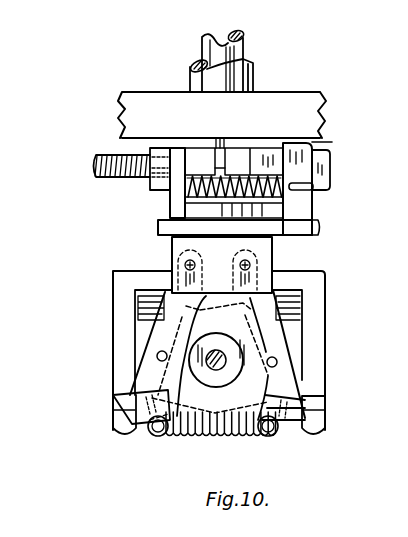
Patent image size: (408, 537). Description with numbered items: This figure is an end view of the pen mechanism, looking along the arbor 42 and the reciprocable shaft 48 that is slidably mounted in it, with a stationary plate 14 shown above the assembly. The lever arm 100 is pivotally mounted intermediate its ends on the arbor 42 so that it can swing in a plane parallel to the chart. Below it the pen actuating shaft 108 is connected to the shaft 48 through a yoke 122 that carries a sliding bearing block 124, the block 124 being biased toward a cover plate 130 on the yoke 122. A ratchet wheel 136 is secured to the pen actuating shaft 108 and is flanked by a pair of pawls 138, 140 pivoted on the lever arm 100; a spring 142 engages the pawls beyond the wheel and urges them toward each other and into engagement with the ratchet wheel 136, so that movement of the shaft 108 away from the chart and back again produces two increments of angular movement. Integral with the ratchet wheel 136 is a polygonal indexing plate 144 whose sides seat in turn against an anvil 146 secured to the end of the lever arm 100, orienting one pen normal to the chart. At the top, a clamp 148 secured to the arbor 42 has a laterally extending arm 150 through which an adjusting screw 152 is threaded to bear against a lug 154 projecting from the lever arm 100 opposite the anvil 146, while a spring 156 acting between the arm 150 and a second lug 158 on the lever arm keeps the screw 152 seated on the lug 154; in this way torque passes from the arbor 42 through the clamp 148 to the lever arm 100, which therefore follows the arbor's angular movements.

The mounting plate 14 is at (300, 101).
The arbor 42 is at (254, 84).
The shaft 48 is at (200, 66).
The lever arm 100 is at (272, 230).
The pen actuating shaft 108 is at (226, 360).
The yoke 122 is at (320, 293).
The bearing block 124 is at (295, 331).
The cover plate 130 is at (322, 418).
The ratchet wheel 136 is at (168, 425).
The pawl 138 is at (292, 387).
The pawl 140 is at (150, 398).
The spring 142 is at (266, 432).
The indexing plate 144 is at (216, 438).
The anvil 146 is at (272, 263).
The clamp 148 is at (328, 153).
The arm 150 is at (162, 178).
The adjusting screw 152 is at (92, 163).
The lug 154 is at (176, 184).
The spring 156 is at (316, 196).
The second lug 158 is at (322, 143).